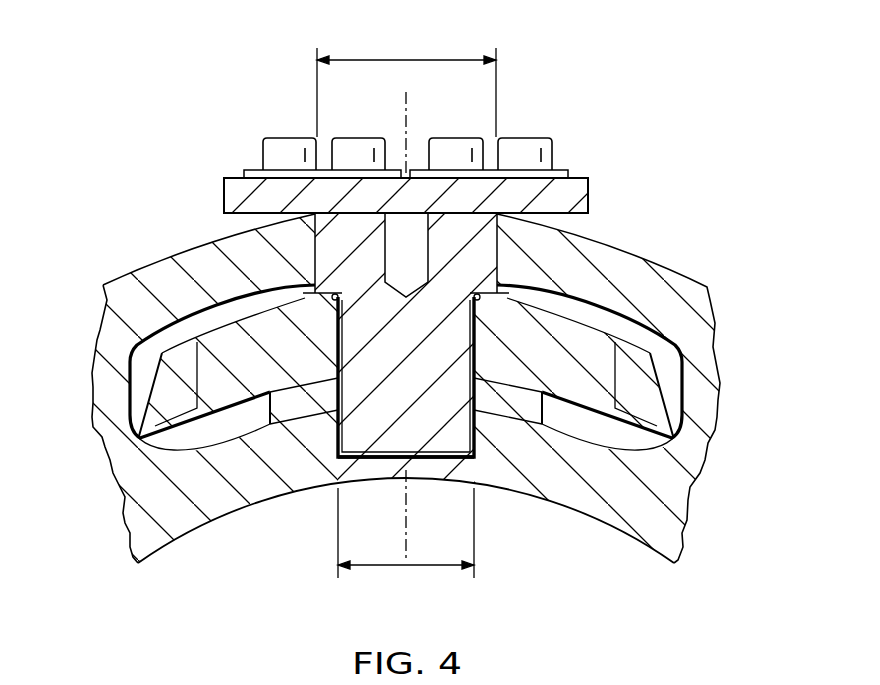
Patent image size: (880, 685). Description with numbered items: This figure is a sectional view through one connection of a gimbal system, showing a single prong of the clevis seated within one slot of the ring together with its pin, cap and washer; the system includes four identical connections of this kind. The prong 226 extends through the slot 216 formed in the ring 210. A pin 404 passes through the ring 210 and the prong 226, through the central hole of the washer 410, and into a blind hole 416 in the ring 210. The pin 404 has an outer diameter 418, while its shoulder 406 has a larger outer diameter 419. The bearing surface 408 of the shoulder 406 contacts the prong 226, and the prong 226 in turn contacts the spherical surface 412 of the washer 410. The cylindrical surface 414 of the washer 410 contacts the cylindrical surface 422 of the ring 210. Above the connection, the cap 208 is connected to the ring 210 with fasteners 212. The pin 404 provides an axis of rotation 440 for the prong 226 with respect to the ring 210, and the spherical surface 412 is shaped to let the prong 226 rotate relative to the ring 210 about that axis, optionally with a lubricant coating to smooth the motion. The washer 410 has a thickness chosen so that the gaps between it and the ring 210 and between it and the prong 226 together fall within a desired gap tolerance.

The cap 208 is at (232, 193).
The ring 210 is at (638, 265).
The fasteners 212 is at (262, 156).
The slot 216 is at (650, 334).
The prong 226 is at (163, 363).
The pin 404 is at (385, 383).
The shoulder 406 is at (322, 250).
The bearing surface 408 is at (332, 298).
The washer 410 is at (323, 408).
The spherical surface 412 is at (531, 388).
The cylindrical surface 414 is at (298, 427).
The blind hole 416 is at (437, 455).
The outer diameter 418 is at (406, 568).
The outer diameter 419 is at (395, 60).
The cylindrical surface 422 is at (538, 420).
The axis of rotation 440 is at (408, 106).